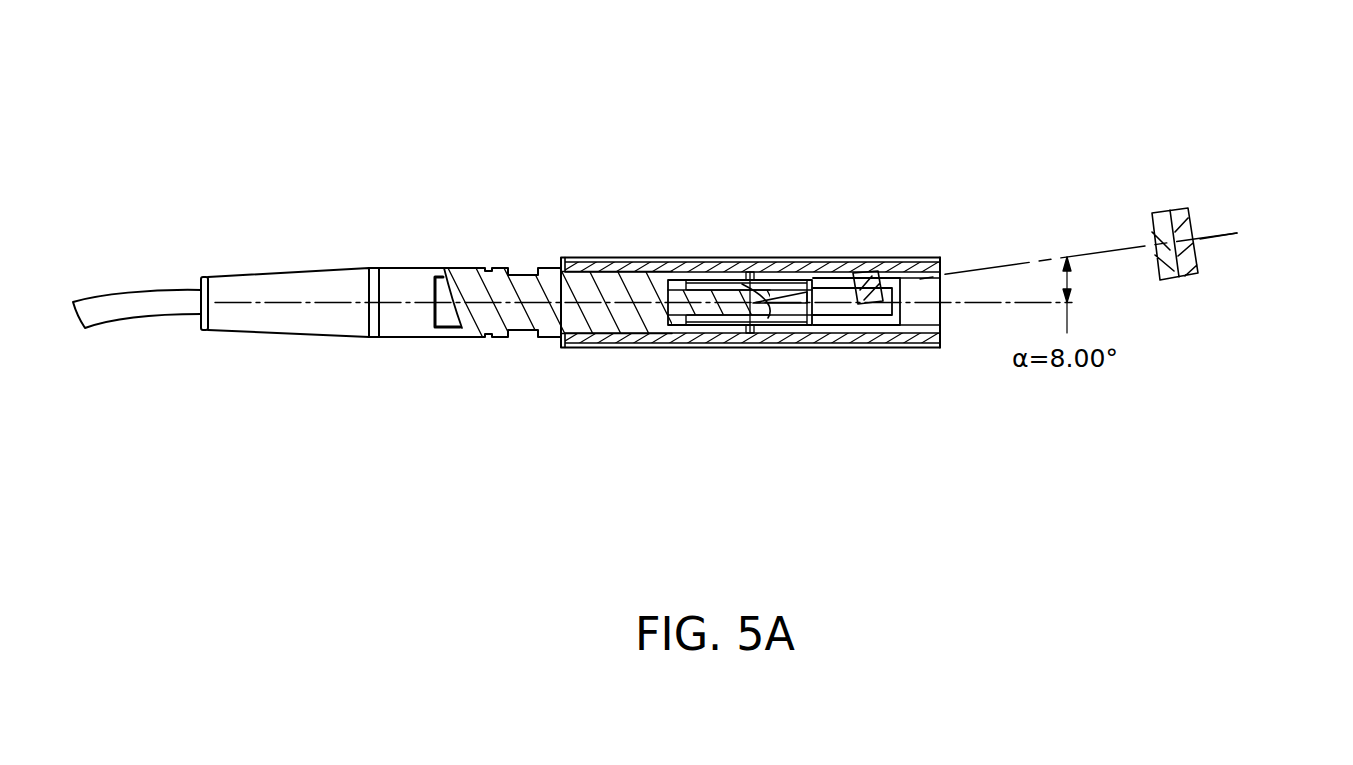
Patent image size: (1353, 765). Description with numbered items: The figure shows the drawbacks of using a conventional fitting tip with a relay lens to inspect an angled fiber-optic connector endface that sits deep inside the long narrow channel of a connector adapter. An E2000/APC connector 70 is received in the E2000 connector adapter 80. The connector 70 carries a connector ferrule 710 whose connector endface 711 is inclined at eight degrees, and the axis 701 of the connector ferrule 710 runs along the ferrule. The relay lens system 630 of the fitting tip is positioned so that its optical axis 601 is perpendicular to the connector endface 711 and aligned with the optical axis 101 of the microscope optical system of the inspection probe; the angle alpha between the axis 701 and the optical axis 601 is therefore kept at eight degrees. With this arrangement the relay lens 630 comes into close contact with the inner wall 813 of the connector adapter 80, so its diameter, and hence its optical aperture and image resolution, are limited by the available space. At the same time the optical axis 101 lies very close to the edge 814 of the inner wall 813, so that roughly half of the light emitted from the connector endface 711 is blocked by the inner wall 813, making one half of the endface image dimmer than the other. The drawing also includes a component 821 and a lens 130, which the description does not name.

The E2000/APC connector 70 is at (464, 262).
The E2000 connector adapter 80 is at (737, 256).
The axis of the connector ferrule 701 is at (588, 348).
The connector ferrule 710 is at (713, 313).
The connector endface 711 is at (755, 316).
The optical axis of the relay lens system 601 is at (788, 318).
The relay lens system 630 is at (852, 270).
The inner wall of the connector adapter 813 is at (912, 279).
The edge of the inner wall 814 is at (942, 277).
The housing end wall 821 is at (940, 336).
The lens 130 is at (1180, 208).
The optical axis of the microscope optical system 101 is at (1225, 233).